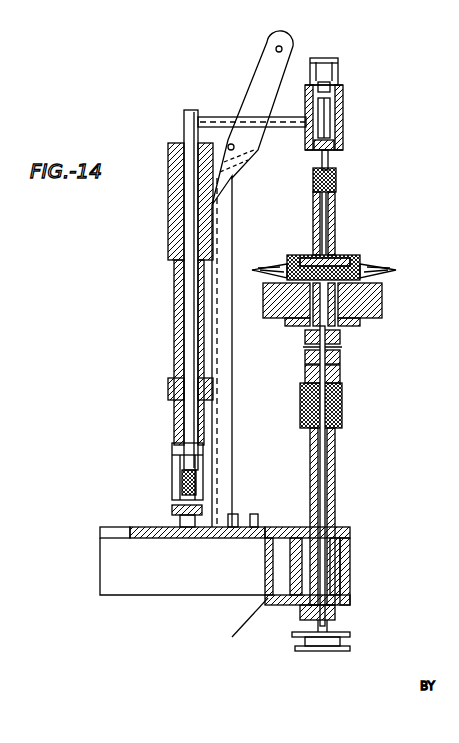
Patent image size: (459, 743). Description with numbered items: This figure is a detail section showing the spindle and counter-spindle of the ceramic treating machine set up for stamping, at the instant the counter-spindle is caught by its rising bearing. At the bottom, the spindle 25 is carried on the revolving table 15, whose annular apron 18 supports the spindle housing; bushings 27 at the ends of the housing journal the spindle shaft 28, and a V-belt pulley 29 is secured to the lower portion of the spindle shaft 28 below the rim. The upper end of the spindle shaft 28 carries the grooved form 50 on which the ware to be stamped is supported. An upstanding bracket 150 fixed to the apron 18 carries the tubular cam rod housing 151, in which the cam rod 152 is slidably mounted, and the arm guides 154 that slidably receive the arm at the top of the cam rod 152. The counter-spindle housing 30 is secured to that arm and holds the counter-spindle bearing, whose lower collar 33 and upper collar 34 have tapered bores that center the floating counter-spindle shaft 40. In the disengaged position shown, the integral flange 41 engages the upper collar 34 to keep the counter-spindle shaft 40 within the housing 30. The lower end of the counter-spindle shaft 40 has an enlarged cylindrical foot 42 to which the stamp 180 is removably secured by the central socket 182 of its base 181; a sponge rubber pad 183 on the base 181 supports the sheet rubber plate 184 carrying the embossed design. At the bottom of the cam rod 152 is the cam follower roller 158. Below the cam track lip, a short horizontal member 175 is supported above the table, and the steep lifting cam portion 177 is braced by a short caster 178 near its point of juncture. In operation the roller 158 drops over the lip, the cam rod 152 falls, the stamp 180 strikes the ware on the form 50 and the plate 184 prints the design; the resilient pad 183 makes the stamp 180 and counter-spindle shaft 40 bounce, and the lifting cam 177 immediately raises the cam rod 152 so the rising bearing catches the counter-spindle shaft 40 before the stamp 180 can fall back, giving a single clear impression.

The arm guides 154 is at (285, 40).
The integral flange 41 is at (338, 70).
The upper collar 34 is at (340, 87).
The counter-spindle housing 30 is at (345, 98).
The counter-spindle shaft 40 is at (335, 118).
The lower collar 33 is at (340, 145).
The enlarged cylindrical foot 42 is at (334, 166).
The stamp 180 is at (329, 215).
The central socket 182 is at (313, 208).
The base 181 is at (297, 255).
The pad 183 is at (348, 262).
The plate 184 is at (362, 272).
The form 50 is at (382, 306).
The cam rod 152 is at (190, 201).
The cam rod housing 151 is at (176, 292).
The bracket 150 is at (232, 360).
The bushings 27 is at (342, 409).
The spindle shaft 28 is at (323, 459).
The spindle 25 is at (345, 485).
The lifting cam portion 177 is at (172, 450).
The roller 158 is at (182, 480).
The horizontal member 175 is at (172, 510).
The caster 178 is at (190, 527).
The annular apron 18 is at (156, 540).
The table 15 is at (361, 565).
The V-belt pulley 29 is at (305, 651).